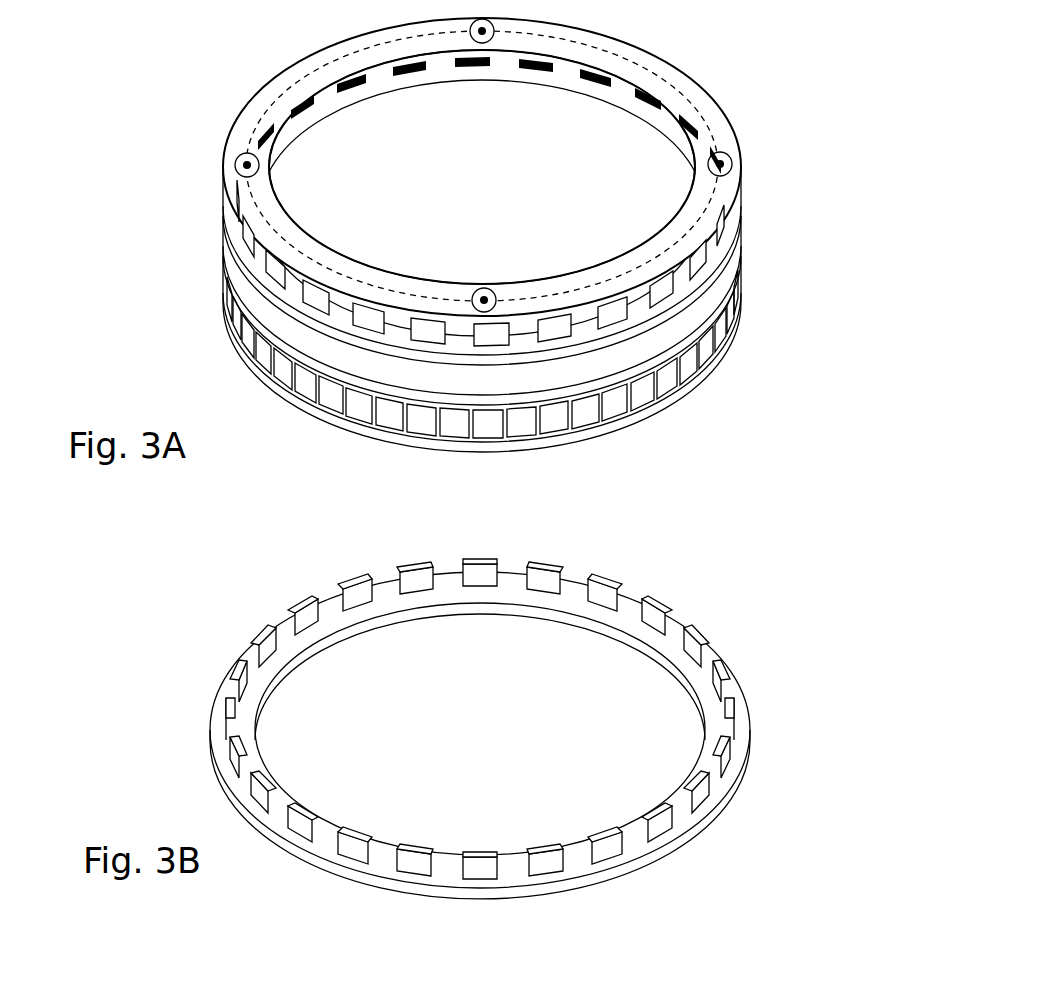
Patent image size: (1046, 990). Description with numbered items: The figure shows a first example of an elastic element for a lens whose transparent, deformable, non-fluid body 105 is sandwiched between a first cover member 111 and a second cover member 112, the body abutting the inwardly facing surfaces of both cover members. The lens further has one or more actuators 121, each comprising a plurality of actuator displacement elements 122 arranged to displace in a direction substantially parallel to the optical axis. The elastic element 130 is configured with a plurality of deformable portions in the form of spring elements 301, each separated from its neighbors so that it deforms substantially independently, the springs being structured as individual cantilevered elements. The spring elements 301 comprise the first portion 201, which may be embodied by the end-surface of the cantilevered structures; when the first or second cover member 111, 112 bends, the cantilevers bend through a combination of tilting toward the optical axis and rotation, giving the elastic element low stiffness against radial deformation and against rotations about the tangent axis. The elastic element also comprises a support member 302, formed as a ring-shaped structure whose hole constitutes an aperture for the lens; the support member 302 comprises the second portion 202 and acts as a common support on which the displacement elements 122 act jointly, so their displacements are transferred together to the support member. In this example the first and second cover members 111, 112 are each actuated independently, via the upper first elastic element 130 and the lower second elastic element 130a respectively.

In FIG. 3A, the transparent, deformable, non-fluid body 105 is at (728, 276).
In FIG. 3A, the first cover member 111 is at (250, 275).
In FIG. 3A, the second cover member 112 is at (250, 340).
In FIG. 3A, the actuator 121 is at (236, 155).
In FIG. 3A, the actuator displacement element 122 is at (234, 165).
In FIG. 3A, the elastic element 130 is at (733, 166).
In FIG. 3A, the second elastic element 130a is at (693, 374).
In FIG. 3B, the second elastic element 130a is at (718, 780).
In FIG. 3B, the first portion 201 is at (657, 818).
In FIG. 3A, the second portion 202 is at (707, 130).
In FIG. 3A, the spring element 301 is at (613, 315).
In FIG. 3B, the spring element 301 is at (554, 864).
In FIG. 3A, the support member 302 is at (298, 95).